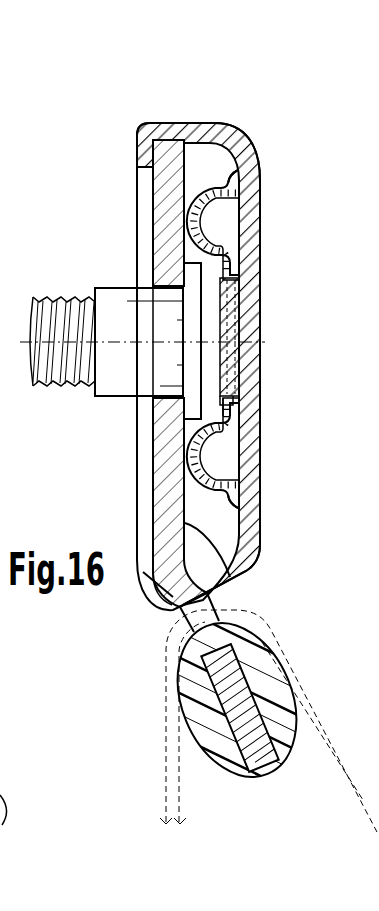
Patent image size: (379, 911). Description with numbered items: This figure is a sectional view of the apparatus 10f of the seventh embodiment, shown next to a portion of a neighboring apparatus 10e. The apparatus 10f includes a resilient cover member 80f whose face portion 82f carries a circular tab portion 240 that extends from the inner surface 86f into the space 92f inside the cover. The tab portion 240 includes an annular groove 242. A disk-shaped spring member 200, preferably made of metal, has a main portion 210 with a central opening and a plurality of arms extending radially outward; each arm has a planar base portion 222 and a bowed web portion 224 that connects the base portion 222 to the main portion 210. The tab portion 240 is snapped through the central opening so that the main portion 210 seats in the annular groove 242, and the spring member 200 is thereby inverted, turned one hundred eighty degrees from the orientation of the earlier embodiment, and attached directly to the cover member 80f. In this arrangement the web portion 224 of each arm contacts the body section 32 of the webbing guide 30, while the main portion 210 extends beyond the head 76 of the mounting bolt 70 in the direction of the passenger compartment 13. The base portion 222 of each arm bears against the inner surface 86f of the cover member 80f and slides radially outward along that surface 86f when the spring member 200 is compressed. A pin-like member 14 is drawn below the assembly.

The apparatus 10f is at (226, 100).
The resilient cover member 80f is at (268, 152).
The face portion 82f is at (260, 413).
The passenger compartment 13 is at (320, 261).
The webbing guide 30 is at (140, 184).
The body section 32 is at (235, 578).
The space 92f is at (220, 530).
The mounting bolt 70 is at (58, 288).
The head 76 is at (192, 368).
The tab portion 240 is at (223, 398).
The annular groove 242 is at (245, 306).
The web portion 224 is at (191, 219).
The base portion 222 is at (237, 189).
The disk-shaped spring member 200 is at (238, 430).
The main portion 210 is at (250, 405).
The inner surface 86f is at (238, 479).
The pivot pin 14 is at (362, 790).
The adjacent clamp assembly 10e is at (12, 754).